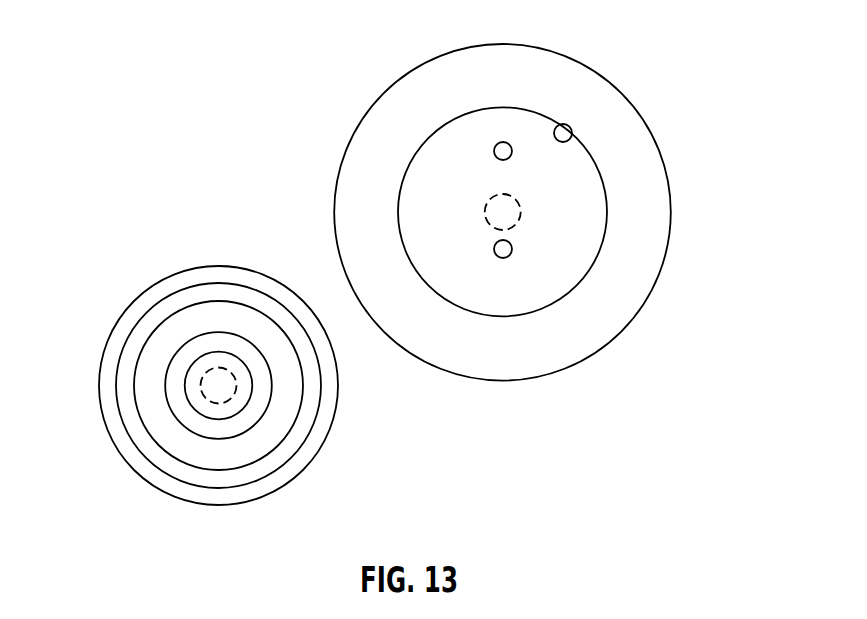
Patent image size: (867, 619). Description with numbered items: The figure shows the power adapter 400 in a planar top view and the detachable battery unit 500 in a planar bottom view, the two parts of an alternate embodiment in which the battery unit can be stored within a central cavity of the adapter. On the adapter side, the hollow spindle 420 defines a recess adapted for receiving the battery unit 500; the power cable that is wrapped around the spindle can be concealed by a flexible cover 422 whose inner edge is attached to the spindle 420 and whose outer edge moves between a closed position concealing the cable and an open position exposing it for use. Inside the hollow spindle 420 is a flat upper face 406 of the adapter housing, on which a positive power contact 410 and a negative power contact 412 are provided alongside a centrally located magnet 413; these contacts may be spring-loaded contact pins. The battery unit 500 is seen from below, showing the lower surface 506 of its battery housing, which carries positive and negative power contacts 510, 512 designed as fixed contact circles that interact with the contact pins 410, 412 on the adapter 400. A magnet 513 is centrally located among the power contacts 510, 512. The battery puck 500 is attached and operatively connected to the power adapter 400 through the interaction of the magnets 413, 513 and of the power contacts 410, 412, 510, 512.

The power adapter 400 is at (533, 217).
The upper face 406 is at (587, 205).
The positive power contact 410 is at (503, 142).
The negative power contact 412 is at (503, 258).
The magnet 413 is at (522, 214).
The hollow spindle 420 is at (563, 141).
The flexible cover 422 is at (573, 73).
The battery unit 500 is at (217, 380).
The lower surface 506 is at (227, 462).
The positive power contact 510 is at (242, 297).
The negative power contact 512 is at (192, 420).
The magnet 513 is at (237, 387).